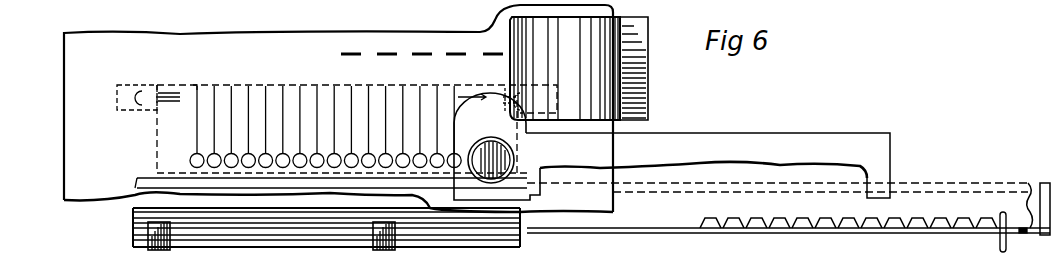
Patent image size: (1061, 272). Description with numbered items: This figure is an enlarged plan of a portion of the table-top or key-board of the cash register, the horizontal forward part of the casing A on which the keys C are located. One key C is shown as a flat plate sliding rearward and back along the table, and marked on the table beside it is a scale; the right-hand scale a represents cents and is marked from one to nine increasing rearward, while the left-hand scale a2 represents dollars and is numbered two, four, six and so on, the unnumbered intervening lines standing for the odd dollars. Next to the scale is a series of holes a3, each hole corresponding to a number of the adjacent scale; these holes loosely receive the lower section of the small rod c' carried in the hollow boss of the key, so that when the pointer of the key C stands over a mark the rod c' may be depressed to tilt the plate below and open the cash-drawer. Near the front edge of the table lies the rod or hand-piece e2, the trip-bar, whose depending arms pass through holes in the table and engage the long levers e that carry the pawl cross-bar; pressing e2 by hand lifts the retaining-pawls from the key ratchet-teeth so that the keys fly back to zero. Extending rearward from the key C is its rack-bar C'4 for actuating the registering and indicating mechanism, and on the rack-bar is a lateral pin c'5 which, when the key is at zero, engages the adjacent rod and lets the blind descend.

The right-hand scale a is at (338, 106).
The left-hand scale a2 is at (353, 56).
The holes a3 is at (392, 150).
The casing A is at (579, 68).
The rod c' is at (461, 99).
The long levers e is at (515, 152).
The rod or hand-piece (trip-bar) e2 is at (497, 139).
The key C is at (777, 165).
The rack-bar C'4 is at (788, 209).
The lateral pin c'5 is at (1020, 234).